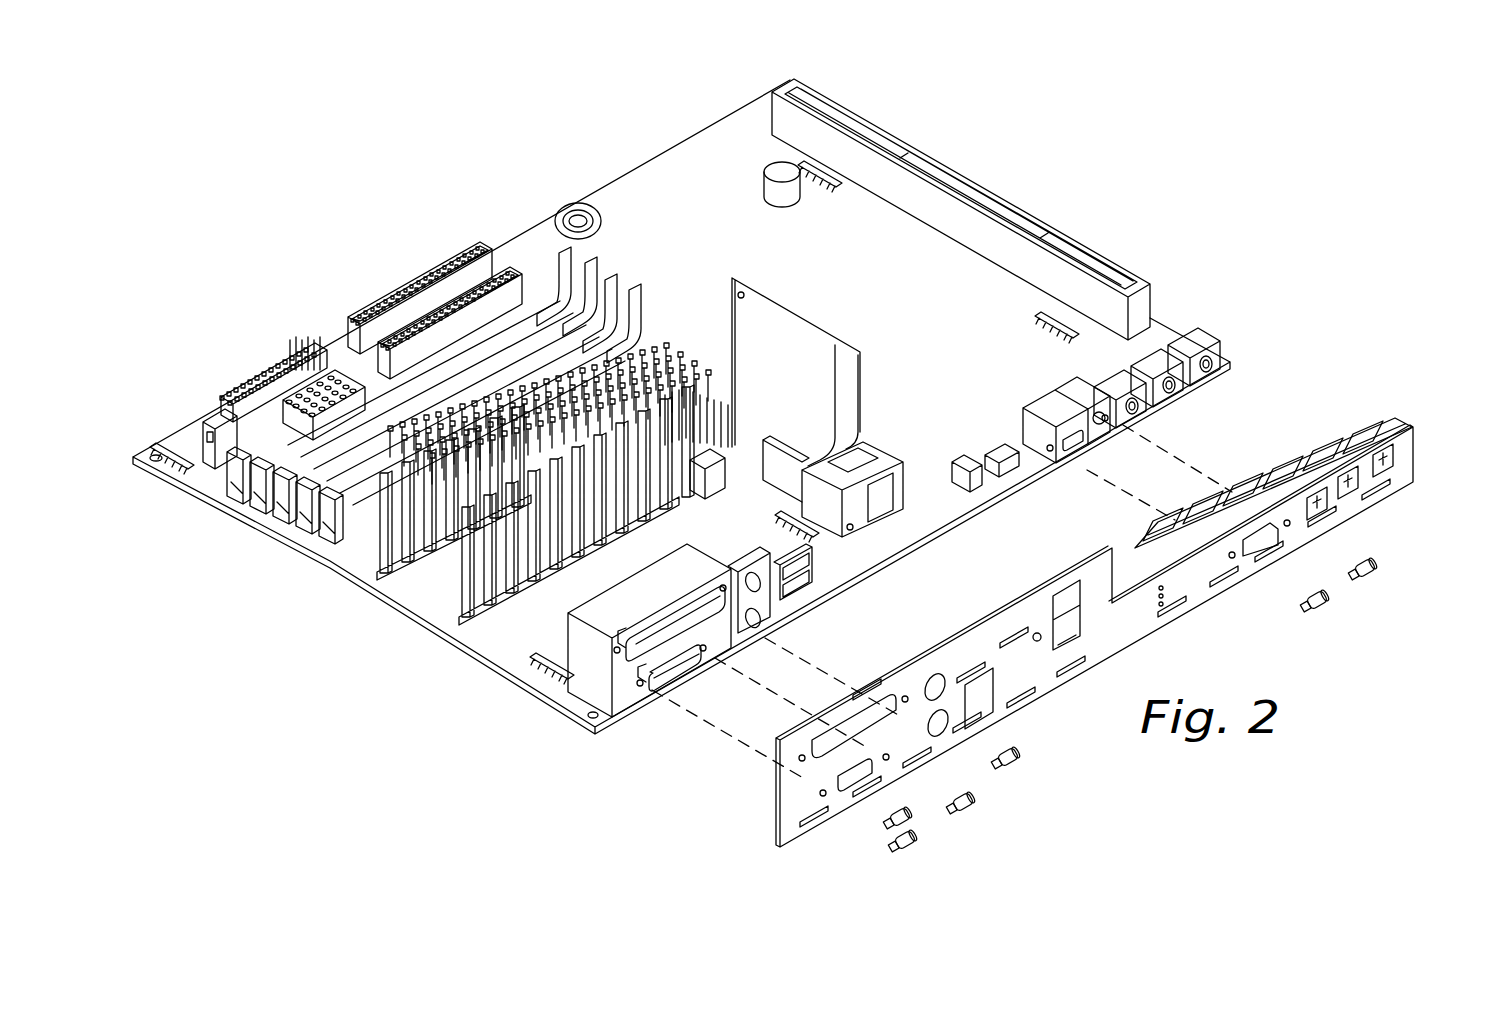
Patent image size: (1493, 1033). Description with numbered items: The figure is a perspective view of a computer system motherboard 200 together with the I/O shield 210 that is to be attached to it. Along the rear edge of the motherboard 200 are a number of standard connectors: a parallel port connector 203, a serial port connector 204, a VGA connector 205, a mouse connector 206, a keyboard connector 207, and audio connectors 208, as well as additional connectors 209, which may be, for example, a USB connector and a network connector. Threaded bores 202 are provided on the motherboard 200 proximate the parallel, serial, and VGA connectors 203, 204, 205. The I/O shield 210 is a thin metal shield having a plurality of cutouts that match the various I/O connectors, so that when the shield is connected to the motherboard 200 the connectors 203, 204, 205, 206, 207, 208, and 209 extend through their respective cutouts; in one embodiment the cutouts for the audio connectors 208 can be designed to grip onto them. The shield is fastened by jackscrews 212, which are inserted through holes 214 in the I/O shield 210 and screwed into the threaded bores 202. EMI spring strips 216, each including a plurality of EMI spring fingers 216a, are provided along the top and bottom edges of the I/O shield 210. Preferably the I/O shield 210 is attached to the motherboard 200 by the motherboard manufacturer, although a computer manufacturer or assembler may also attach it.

The computer system motherboard 200 is at (474, 208).
The threaded bores 202 is at (1095, 408).
The parallel port connector 203 is at (678, 612).
The serial port connector 204 is at (668, 697).
The VGA connector 205 is at (1090, 450).
The mouse connector 206 is at (748, 572).
The keyboard connector 207 is at (752, 622).
The audio connectors 208 is at (1216, 368).
The additional connectors 209 is at (905, 490).
The I/O shield 210 is at (1420, 458).
The jackscrews 212 is at (1370, 575).
The holes 214 is at (1288, 528).
The EMI spring strips 216 is at (1345, 438).
The EMI spring fingers 216a is at (1300, 468).